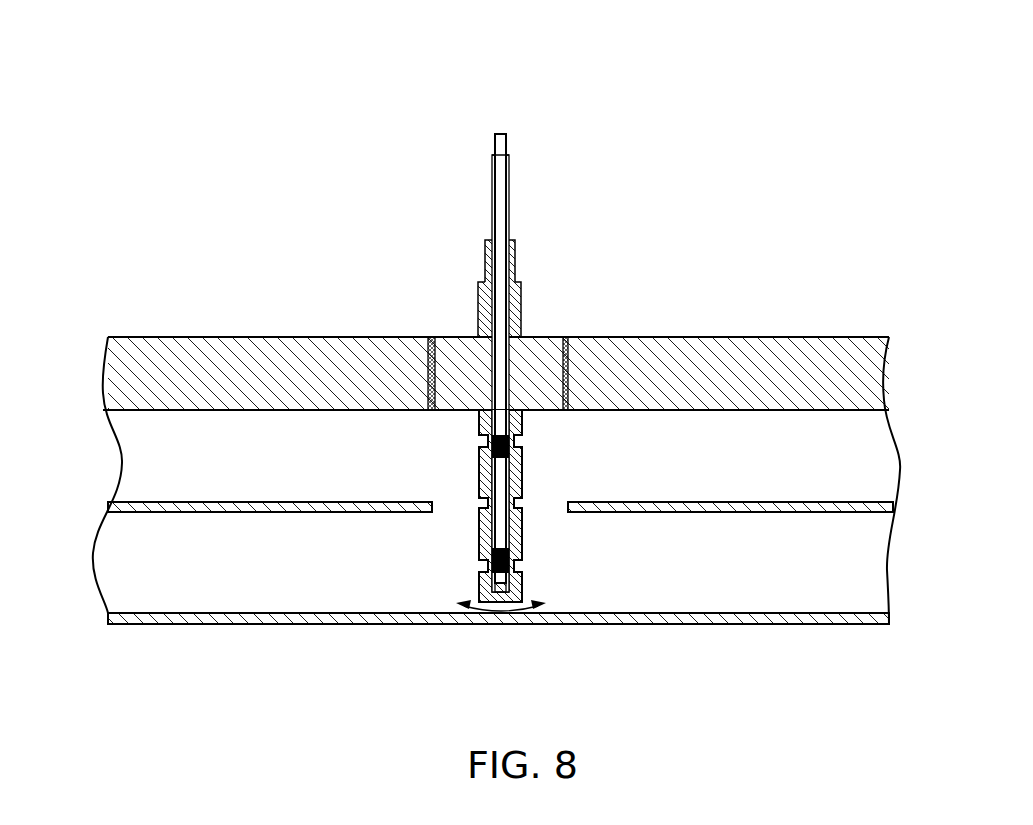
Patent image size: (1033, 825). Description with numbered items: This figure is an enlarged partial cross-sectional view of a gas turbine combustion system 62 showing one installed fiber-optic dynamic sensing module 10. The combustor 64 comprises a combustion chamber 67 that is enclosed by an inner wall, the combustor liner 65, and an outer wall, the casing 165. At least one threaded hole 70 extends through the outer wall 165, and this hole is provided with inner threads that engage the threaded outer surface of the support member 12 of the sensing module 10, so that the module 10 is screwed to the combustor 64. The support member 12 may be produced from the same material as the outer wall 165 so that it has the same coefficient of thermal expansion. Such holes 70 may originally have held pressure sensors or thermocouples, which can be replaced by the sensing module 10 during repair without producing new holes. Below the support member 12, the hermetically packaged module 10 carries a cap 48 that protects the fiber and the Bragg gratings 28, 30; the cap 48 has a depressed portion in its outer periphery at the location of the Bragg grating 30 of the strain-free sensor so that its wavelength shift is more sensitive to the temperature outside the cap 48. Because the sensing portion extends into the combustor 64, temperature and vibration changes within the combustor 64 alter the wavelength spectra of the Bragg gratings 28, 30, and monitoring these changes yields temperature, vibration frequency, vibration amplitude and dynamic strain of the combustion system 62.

The combustion system 62 is at (492, 347).
The fiber-optic dynamic sensing module 10 is at (514, 252).
The support member 12 is at (545, 337).
The casing 165 is at (285, 337).
The threaded hole 70 is at (432, 337).
The combustor 64 is at (786, 337).
The combustor liner 65 is at (478, 558).
The cap 48 is at (499, 506).
The Bragg grating 28 is at (517, 443).
The Bragg grating 30 is at (517, 563).
The combustion chamber 67 is at (250, 587).